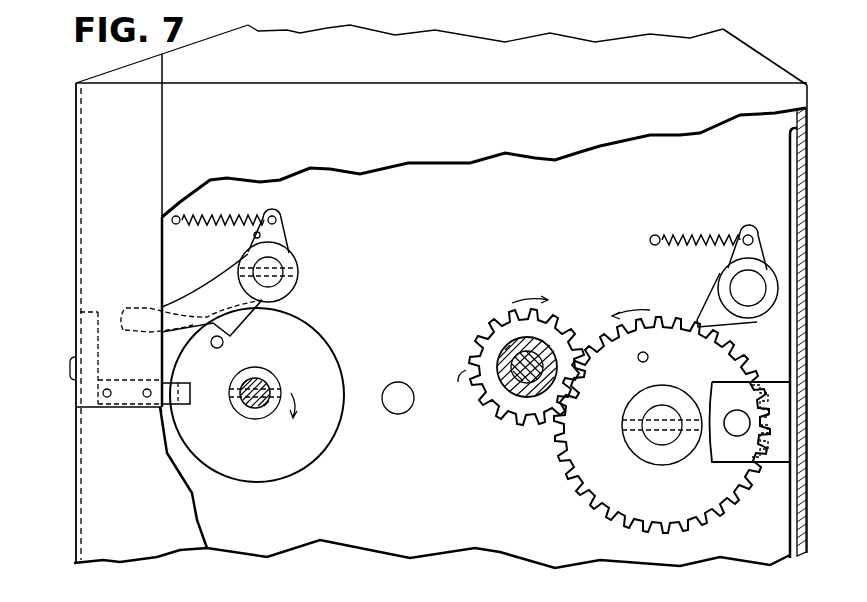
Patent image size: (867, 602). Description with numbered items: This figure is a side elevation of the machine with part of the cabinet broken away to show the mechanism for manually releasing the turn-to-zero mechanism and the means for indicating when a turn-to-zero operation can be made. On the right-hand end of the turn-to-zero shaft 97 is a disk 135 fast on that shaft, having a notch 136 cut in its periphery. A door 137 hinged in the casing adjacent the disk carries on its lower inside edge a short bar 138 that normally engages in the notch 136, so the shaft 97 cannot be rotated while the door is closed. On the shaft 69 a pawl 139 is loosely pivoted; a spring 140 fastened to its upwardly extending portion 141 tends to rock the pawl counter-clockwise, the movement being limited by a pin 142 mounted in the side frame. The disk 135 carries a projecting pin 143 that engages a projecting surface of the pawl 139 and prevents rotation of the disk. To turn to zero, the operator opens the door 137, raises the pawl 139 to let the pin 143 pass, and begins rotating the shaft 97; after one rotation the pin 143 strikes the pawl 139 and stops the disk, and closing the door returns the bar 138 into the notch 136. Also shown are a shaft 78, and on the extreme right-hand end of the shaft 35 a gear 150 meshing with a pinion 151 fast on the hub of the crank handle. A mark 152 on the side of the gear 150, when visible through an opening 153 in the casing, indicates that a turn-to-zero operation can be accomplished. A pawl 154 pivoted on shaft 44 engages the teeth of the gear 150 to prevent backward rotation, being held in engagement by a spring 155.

The door 137 is at (160, 118).
The spring 140 is at (222, 217).
The upwardly extending portion 141 is at (282, 225).
The pin 142 is at (254, 236).
The shaft 69 is at (273, 265).
The pawl 139 is at (210, 295).
The projecting pin 143 is at (224, 340).
The short bar 138 is at (188, 382).
The notch 136 is at (173, 408).
The disk 135 is at (332, 350).
The shaft 97 is at (263, 383).
The shaft 78 is at (414, 399).
The pinion 151 is at (562, 333).
The spring 155 is at (685, 235).
The pawl 154 is at (708, 308).
The shaft 44 is at (745, 300).
The mark 152 is at (648, 361).
The gear 150 is at (572, 466).
The shaft 35 is at (660, 442).
The opening 153 is at (730, 433).